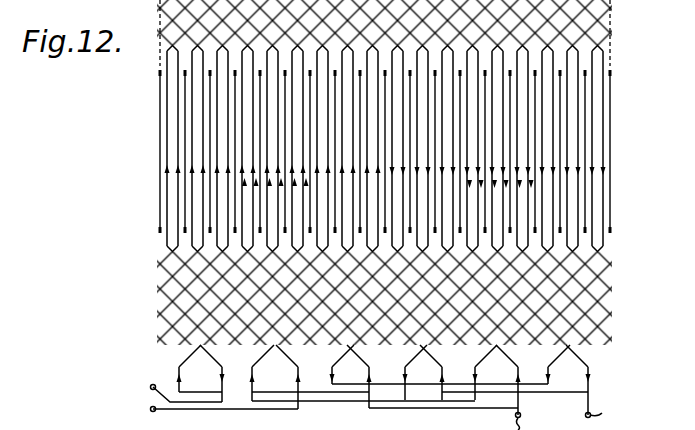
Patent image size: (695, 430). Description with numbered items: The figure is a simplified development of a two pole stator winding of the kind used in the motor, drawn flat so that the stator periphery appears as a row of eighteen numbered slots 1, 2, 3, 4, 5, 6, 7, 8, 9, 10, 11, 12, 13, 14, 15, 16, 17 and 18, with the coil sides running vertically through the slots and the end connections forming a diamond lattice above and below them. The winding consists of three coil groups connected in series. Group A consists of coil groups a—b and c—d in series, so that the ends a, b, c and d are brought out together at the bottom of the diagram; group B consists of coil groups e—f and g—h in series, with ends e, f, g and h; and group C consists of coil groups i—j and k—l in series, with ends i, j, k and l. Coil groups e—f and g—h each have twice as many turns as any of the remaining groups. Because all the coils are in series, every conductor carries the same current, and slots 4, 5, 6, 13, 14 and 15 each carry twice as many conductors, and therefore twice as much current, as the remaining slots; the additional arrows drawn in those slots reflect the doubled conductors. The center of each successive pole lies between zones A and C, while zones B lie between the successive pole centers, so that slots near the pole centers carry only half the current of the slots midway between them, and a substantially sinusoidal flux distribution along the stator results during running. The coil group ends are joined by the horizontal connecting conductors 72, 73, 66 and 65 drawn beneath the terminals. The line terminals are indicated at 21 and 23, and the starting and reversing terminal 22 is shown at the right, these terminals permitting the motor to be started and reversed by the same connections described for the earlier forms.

The stator slot 1 is at (173, 149).
The stator slot 2 is at (198, 149).
The stator slot 3 is at (223, 149).
The stator slot 4 is at (249, 149).
The stator slot 5 is at (274, 149).
The stator slot 6 is at (299, 149).
The stator slot 7 is at (323, 149).
The stator slot 8 is at (348, 149).
The stator slot 9 is at (373, 149).
The stator slot 10 is at (398, 149).
The stator slot 11 is at (423, 149).
The stator slot 12 is at (448, 149).
The stator slot 13 is at (474, 149).
The stator slot 14 is at (499, 149).
The stator slot 15 is at (524, 149).
The stator slot 16 is at (548, 149).
The stator slot 17 is at (573, 149).
The stator slot 18 is at (598, 149).
The line terminal 21 is at (151, 385).
The starting and reversing terminal 22 is at (610, 413).
The line terminal 23 is at (151, 411).
The connecting conductor 65 is at (440, 419).
The connecting conductor 66 is at (363, 415).
The connecting conductor 72 is at (195, 408).
The connecting conductor 73 is at (238, 419).
The coil group end a is at (229, 362).
The coil group end b is at (251, 366).
The coil group end c is at (477, 367).
The coil group end d is at (439, 372).
The coil group end e is at (584, 381).
The coil group end f is at (189, 368).
The coil group end g is at (415, 372).
The coil group end h is at (366, 376).
The coil group end i is at (511, 387).
The coil group end j is at (550, 379).
The coil group end k is at (332, 372).
The coil group end l is at (292, 377).